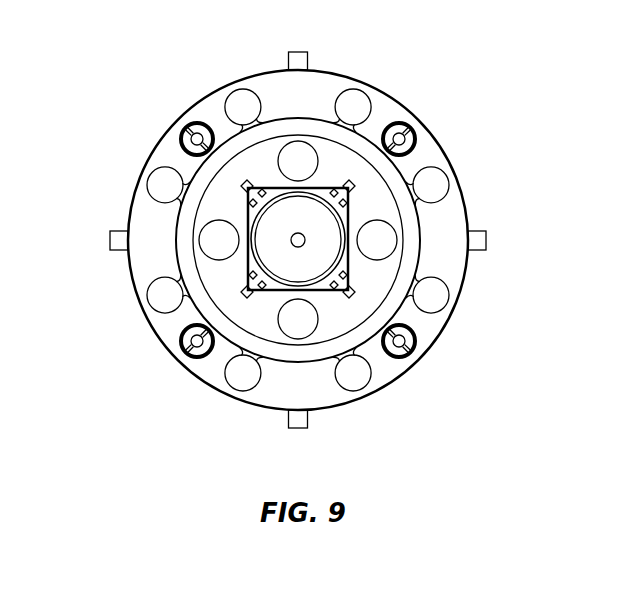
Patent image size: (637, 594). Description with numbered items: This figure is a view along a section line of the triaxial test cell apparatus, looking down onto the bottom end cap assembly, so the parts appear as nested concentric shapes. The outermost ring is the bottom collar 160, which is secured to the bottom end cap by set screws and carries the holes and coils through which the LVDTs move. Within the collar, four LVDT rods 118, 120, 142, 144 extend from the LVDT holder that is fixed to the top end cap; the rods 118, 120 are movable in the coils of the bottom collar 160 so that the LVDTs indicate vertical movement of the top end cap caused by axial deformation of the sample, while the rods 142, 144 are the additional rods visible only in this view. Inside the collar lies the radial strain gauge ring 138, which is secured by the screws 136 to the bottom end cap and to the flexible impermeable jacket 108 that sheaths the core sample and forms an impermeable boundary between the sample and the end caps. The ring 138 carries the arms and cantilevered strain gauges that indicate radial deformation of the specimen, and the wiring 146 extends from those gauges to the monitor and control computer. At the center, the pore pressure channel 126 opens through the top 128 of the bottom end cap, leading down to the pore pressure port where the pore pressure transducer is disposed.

The bottom collar 160 is at (270, 77).
The flexible impermeable jacket 108 is at (324, 188).
The LVDT rod 142 is at (182, 130).
The LVDT rod 120 is at (414, 133).
The LVDT rod 118 is at (207, 358).
The LVDT rod 144 is at (390, 358).
The screws 136 is at (248, 193).
The radial strain gauge ring 138 is at (352, 208).
The top of the bottom end cap 128 is at (323, 255).
The pore pressure channel 126 is at (291, 246).
The wiring 146 is at (340, 292).